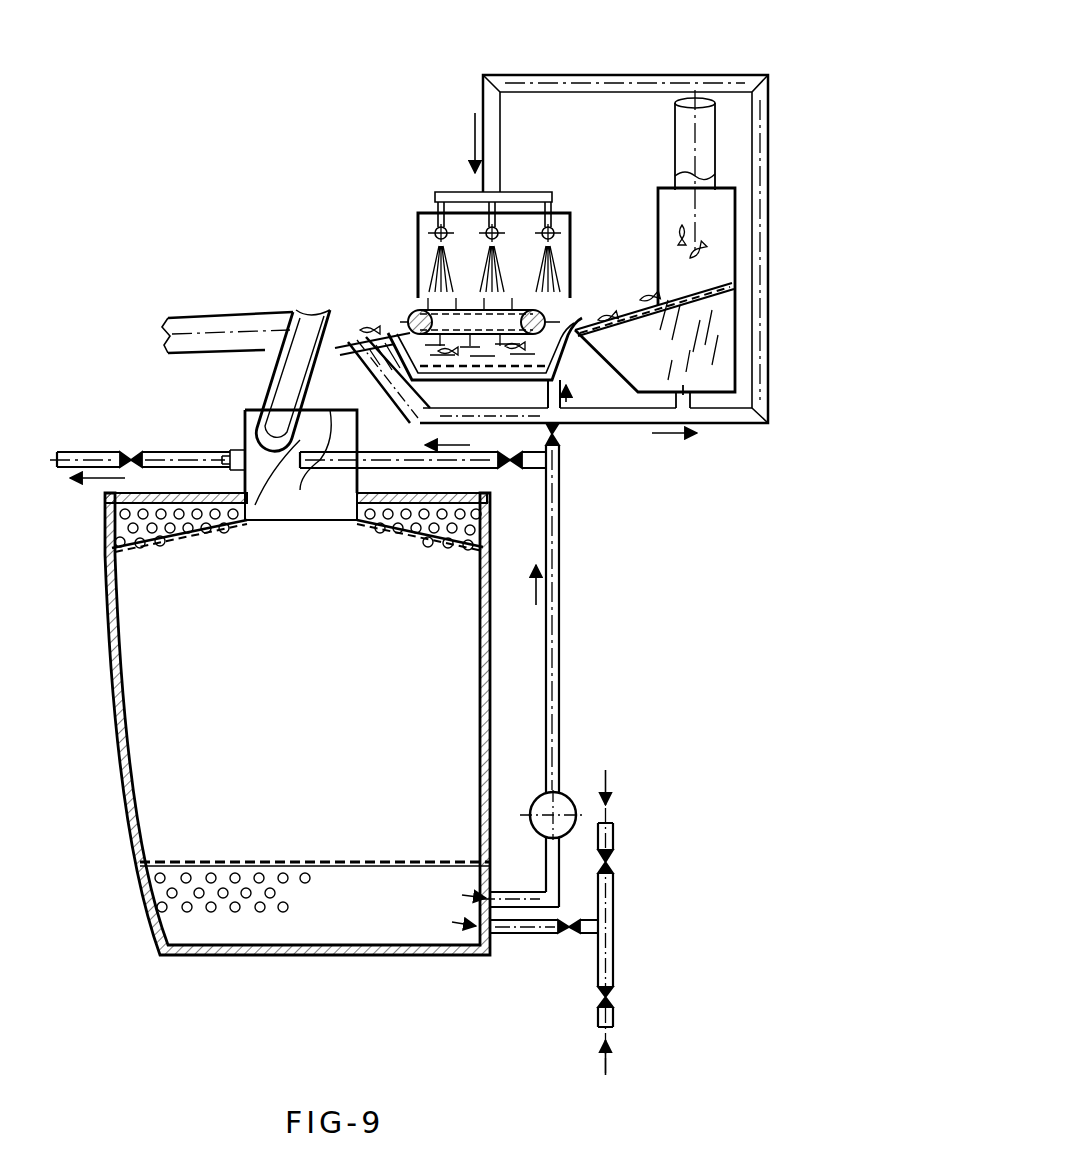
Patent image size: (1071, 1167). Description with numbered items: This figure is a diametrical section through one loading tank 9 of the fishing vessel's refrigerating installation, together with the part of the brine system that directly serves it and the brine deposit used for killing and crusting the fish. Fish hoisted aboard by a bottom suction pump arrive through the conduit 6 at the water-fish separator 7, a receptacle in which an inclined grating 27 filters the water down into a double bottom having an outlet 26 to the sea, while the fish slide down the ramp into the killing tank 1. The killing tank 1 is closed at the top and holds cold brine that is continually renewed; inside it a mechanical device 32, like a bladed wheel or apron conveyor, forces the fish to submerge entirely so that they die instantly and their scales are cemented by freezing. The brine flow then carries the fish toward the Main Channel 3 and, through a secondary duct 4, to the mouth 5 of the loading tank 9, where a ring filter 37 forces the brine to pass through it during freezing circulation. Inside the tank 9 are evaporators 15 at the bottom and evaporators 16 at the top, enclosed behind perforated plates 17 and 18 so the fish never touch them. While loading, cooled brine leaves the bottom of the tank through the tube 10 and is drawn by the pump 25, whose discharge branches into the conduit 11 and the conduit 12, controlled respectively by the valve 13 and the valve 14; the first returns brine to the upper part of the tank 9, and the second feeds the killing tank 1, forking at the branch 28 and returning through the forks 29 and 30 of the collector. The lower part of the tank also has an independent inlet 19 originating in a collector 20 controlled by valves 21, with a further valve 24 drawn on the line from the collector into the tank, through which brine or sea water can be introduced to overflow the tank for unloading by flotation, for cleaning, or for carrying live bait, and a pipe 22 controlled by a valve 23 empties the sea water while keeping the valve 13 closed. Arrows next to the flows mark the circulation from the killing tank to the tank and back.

The killing tank 1 is at (418, 213).
The Main Channel 3 is at (216, 322).
The secondary duct 4 is at (290, 366).
The mouth of loading tank 5 is at (262, 452).
The conduit from suction pump 6 is at (688, 118).
The water-fish separator 7 is at (658, 190).
The loading tank 9 is at (107, 630).
The tube 10 is at (607, 845).
The conduit 11 is at (485, 465).
The conduit 12 is at (560, 432).
The valve 13 is at (555, 520).
The valve 14 is at (555, 460).
The bottom evaporators 15 is at (185, 910).
The top evaporators 16 is at (152, 528).
The perforated plate 17 is at (180, 862).
The perforated plate 18 is at (135, 537).
The inlet 19 is at (530, 932).
The collector 20 is at (600, 960).
The valves 21 is at (615, 960).
The pipe 22 is at (85, 455).
The valve 23 is at (135, 455).
The valve 24 is at (572, 928).
The pump 25 is at (560, 805).
The outlet 26 is at (683, 398).
The grating 27 is at (628, 300).
The branch 28 is at (570, 392).
The fork 29 is at (420, 418).
The fork 30 is at (610, 423).
The mechanical device 32 is at (422, 305).
The ring filter 37 is at (345, 445).